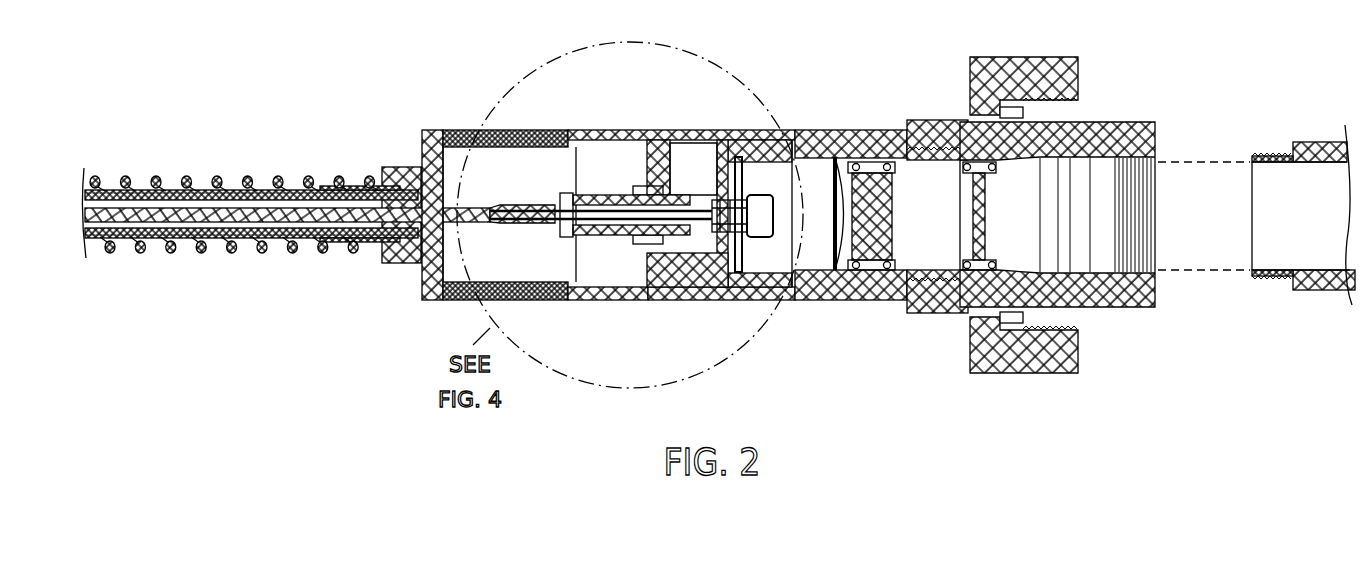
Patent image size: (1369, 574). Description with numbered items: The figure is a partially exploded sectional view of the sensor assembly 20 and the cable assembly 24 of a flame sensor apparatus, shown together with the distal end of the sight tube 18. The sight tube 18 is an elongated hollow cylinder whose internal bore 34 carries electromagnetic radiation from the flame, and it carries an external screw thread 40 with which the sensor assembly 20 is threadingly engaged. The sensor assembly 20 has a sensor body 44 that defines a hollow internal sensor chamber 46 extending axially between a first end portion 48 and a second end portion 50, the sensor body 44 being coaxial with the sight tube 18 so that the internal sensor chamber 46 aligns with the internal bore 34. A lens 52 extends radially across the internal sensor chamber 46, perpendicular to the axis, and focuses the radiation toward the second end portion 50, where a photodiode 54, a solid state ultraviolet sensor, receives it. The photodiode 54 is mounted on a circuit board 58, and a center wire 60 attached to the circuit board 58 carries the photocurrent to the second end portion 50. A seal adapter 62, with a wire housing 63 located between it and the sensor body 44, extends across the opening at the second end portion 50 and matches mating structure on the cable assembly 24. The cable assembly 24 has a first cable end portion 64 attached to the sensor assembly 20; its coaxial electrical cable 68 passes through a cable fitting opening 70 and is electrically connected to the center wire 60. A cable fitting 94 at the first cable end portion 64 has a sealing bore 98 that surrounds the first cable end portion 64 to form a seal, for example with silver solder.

The sight tube 18 is at (1304, 206).
The sensor assembly 20 is at (712, 58).
The cable assembly 24 is at (131, 265).
The internal bore 34 is at (1338, 262).
The screw thread 40 is at (1270, 152).
The sensor body 44 is at (700, 300).
The internal sensor chamber 46 is at (813, 172).
The first end portion 48 is at (1000, 150).
The second end portion 50 is at (672, 130).
The lens 52 is at (882, 247).
The photodiode 54 is at (785, 158).
The circuit board 58 is at (740, 157).
The center wire 60 is at (672, 240).
The seal adapter 62 is at (460, 130).
The wire housing 63 is at (597, 300).
The first cable end portion 64 is at (398, 180).
The electrical cable 68 is at (277, 212).
The cable fitting opening 70 is at (420, 165).
The cable fitting 94 is at (422, 276).
The sealing bore 98 is at (400, 232).